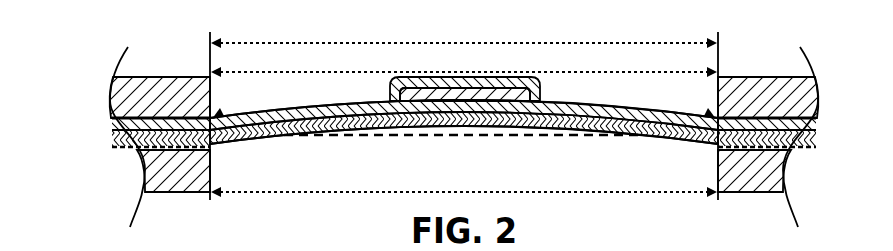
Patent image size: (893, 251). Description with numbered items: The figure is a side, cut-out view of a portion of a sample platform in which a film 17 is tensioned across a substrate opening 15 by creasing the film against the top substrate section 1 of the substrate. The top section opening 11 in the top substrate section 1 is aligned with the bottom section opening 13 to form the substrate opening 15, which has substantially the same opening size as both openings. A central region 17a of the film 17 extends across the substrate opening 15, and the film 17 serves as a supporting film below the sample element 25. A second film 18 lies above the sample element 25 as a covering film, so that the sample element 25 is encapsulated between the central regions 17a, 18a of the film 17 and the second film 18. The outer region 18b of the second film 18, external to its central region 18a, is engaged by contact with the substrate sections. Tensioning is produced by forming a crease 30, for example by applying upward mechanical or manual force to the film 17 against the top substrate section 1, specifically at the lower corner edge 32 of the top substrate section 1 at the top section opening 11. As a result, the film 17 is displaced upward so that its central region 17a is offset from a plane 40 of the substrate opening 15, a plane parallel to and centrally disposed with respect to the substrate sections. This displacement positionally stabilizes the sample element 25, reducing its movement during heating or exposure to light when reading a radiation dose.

The top substrate section 1 is at (166, 77).
The top section opening 11 is at (598, 72).
The bottom section opening 13 is at (563, 192).
The substrate opening 15 is at (407, 43).
The film 17 is at (232, 144).
The central region of film 17a is at (472, 133).
The second film 18 is at (327, 107).
The central region of second film 18a is at (460, 83).
The outer region of second film 18b is at (464, 97).
The sample element 25 is at (468, 98).
The crease 30 is at (219, 113).
The lower corner edge 32 is at (206, 117).
The plane of substrate opening 40 is at (387, 138).